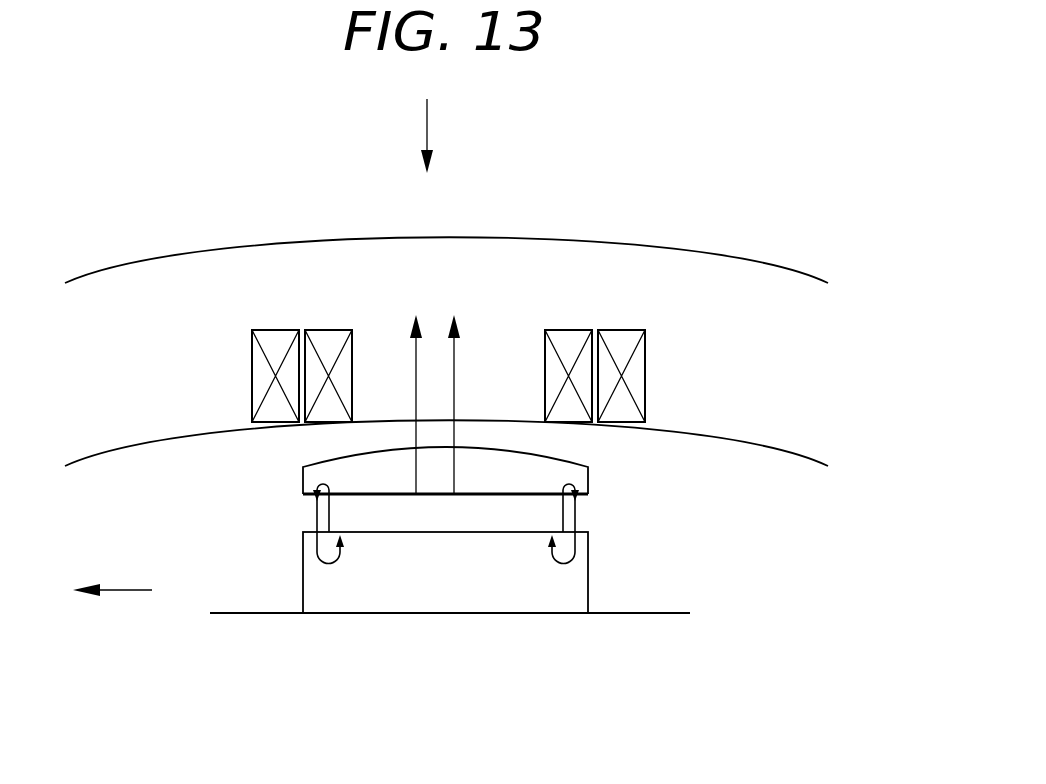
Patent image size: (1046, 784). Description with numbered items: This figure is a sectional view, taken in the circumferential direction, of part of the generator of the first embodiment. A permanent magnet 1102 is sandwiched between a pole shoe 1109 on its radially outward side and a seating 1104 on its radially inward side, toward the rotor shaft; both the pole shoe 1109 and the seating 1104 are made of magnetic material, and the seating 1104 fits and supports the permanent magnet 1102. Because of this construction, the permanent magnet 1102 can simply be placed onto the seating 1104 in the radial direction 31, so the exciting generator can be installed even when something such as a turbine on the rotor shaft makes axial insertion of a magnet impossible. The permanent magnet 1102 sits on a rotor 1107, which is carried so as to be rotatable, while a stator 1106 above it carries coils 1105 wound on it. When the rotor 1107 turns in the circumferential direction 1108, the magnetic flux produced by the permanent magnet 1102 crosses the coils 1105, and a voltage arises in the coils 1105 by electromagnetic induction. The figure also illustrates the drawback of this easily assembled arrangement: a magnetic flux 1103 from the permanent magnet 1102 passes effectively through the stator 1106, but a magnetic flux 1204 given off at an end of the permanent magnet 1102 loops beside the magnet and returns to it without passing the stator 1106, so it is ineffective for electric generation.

The radial direction 31 is at (427, 123).
The permanent magnet 1102 is at (367, 498).
The magnetic flux 1103 is at (454, 347).
The seating 1104 is at (578, 575).
The coils 1105 is at (643, 383).
The stator 1106 is at (682, 258).
The rotor 1107 is at (240, 627).
The circumferential direction 1108 is at (120, 590).
The pole shoe 1109 is at (551, 467).
The magnetic flux 1204 is at (575, 515).